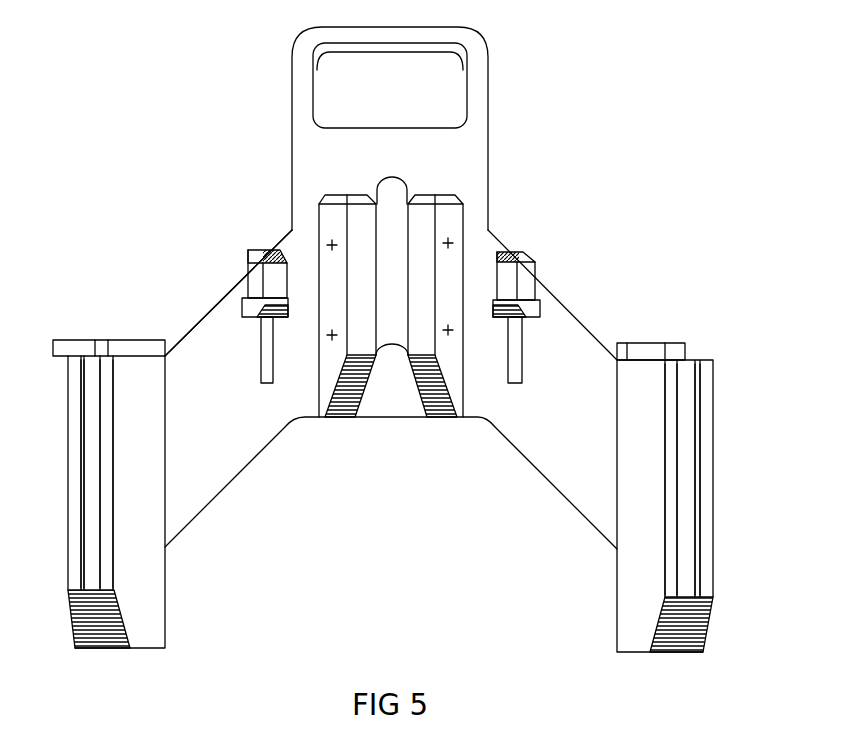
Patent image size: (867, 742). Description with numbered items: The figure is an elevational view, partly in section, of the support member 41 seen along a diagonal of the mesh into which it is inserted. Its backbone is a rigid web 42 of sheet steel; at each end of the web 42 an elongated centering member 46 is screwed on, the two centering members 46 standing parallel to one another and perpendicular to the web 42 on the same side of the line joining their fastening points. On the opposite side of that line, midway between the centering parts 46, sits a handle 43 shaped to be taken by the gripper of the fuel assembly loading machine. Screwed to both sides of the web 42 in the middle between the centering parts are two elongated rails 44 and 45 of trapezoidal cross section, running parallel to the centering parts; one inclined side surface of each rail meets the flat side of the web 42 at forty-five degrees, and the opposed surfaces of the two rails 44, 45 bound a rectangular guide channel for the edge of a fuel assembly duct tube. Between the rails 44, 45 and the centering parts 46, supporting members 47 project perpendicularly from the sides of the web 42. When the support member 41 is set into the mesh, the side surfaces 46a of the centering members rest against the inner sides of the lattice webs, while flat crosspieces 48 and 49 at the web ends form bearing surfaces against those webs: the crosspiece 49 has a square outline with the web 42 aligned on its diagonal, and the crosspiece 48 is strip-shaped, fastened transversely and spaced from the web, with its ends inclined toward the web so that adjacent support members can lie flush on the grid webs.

The support member 41 is at (488, 176).
The web 42 is at (210, 328).
The handle 43 is at (475, 68).
The rail 44 is at (330, 223).
The rail 45 is at (457, 225).
The centering member 46 is at (165, 612).
The side surface 46a is at (107, 438).
The supporting member 47 is at (255, 263).
The strip-shaped crosspiece 48 is at (650, 350).
The square crosspiece 49 is at (117, 342).